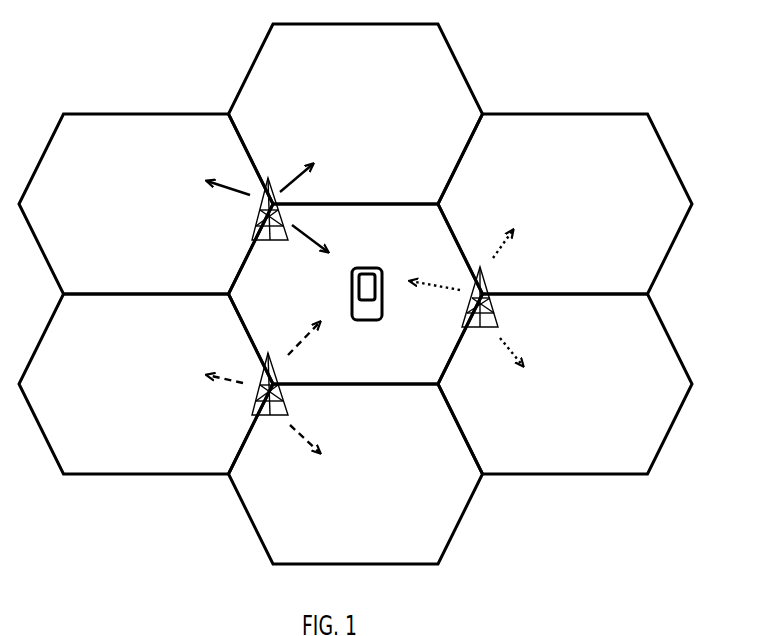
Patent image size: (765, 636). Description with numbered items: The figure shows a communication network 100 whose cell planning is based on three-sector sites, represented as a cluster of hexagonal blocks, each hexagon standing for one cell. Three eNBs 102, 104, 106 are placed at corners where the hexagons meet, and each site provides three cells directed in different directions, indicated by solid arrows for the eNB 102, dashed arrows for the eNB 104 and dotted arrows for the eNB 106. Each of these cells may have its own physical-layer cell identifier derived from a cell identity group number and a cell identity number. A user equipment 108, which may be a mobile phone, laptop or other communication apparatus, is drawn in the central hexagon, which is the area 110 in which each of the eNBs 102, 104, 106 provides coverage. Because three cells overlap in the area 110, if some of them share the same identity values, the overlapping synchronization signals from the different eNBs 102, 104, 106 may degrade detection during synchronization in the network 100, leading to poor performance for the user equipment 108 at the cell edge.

The network 100 is at (616, 73).
The eNB 102 is at (258, 218).
The eNB 104 is at (252, 413).
The eNB 106 is at (497, 322).
The user equipment 108 is at (366, 321).
The area 110 is at (406, 240).